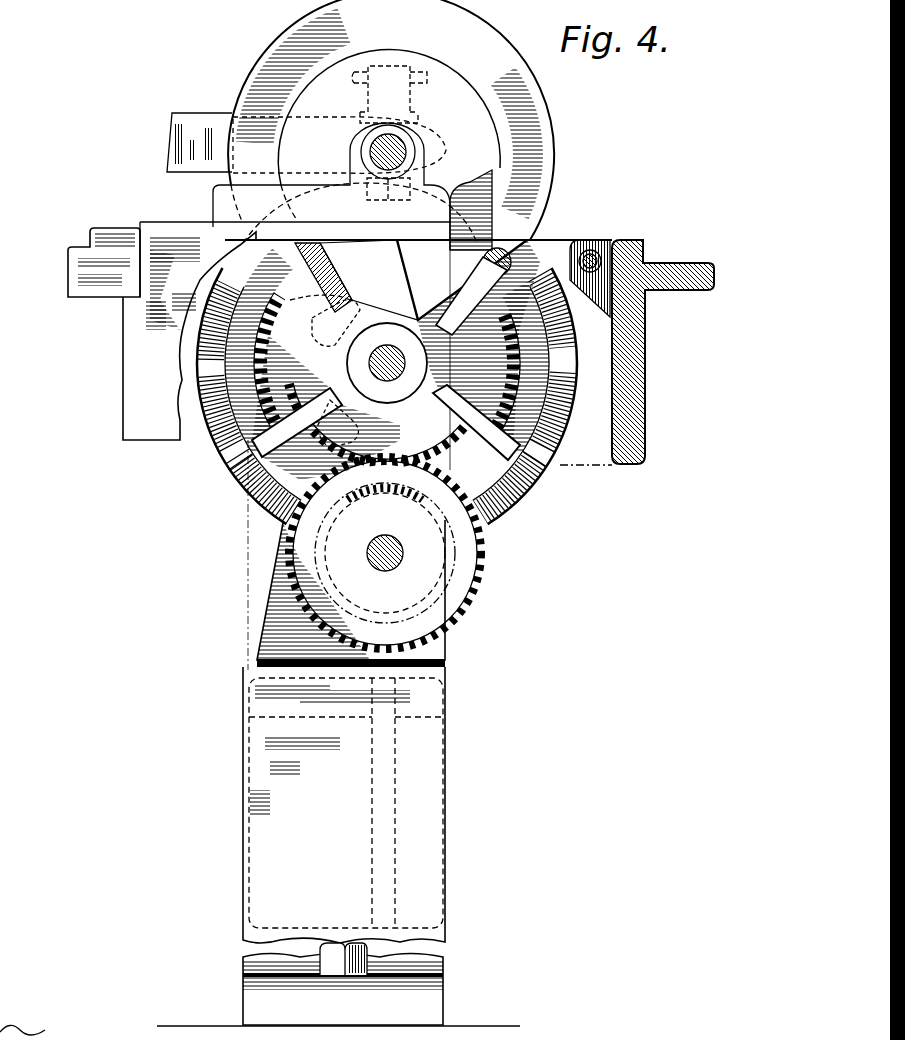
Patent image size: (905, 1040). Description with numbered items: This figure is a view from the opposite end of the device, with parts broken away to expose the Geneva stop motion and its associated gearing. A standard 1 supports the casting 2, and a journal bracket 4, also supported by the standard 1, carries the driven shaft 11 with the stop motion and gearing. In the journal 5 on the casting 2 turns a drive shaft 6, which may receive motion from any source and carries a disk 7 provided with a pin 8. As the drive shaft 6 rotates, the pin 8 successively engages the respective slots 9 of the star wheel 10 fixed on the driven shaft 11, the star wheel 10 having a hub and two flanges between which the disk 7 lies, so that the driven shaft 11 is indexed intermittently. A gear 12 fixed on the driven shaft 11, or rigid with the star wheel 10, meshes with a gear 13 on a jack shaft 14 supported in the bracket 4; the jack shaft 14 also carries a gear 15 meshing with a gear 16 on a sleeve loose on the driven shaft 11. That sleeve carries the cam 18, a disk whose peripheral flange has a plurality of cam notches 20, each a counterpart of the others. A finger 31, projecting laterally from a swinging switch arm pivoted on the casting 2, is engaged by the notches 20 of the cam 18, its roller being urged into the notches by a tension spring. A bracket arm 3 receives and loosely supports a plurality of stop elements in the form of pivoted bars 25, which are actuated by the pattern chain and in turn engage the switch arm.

The standard 1 is at (440, 800).
The casting 2 is at (138, 402).
The bracket arm 3 is at (640, 270).
The journal bracket 4 is at (282, 625).
The journal 5 is at (362, 148).
The drive shaft 6 is at (380, 147).
The disk 7 is at (555, 150).
The pin 8 is at (503, 258).
The slots 9 is at (442, 293).
The star wheel 10 is at (530, 472).
The driven shaft 11 is at (385, 368).
The gear 12 is at (352, 440).
The gear 13 is at (465, 582).
The jack shaft 14 is at (380, 546).
The gear 15 is at (453, 555).
The gear 16 is at (273, 380).
The cam 18 is at (548, 440).
The cam notches 20 is at (267, 493).
The pivoted bars 25 is at (116, 298).
The finger 31 is at (193, 122).